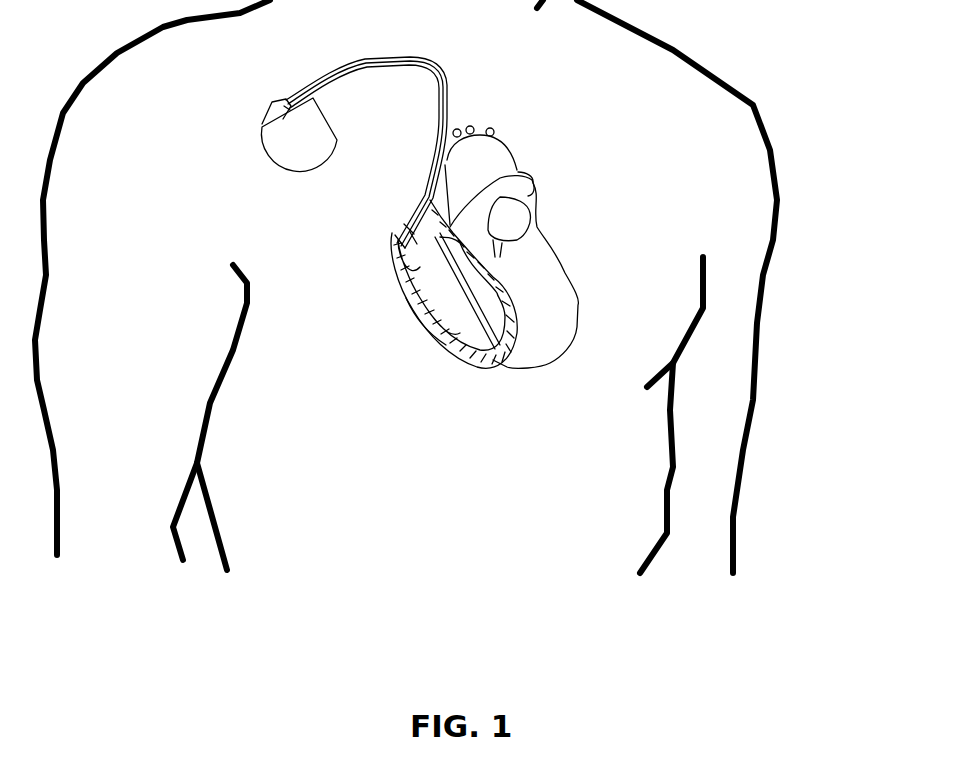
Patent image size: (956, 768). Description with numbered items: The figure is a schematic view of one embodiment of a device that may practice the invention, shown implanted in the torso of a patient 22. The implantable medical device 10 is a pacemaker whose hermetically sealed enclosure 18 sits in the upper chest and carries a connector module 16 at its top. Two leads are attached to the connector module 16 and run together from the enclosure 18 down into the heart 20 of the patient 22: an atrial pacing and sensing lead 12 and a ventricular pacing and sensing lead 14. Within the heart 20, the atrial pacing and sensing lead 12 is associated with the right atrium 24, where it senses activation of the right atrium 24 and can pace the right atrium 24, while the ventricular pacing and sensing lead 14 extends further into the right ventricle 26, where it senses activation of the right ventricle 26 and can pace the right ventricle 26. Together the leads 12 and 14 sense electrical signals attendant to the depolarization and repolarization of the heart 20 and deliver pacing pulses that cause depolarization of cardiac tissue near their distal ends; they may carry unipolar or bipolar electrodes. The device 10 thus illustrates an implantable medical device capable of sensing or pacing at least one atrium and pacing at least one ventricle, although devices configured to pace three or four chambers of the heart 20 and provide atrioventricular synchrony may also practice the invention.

The implantable medical device 10 is at (287, 193).
The atrial pacing and sensing lead 12 is at (393, 240).
The ventricular pacing and sensing lead 14 is at (467, 333).
The connector module 16 is at (268, 113).
The hermetically sealed enclosure 18 is at (277, 158).
The heart 20 is at (567, 280).
The patient 22 is at (752, 185).
The right atrium 24 is at (393, 260).
The right ventricle 26 is at (427, 325).